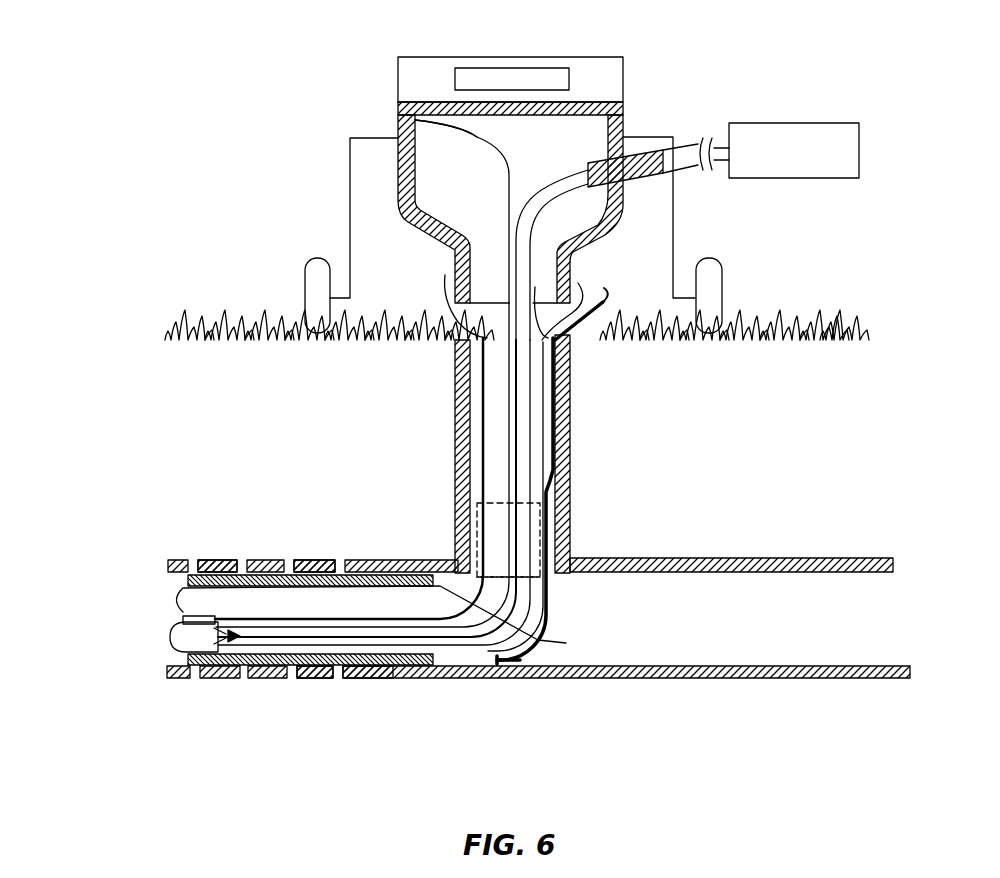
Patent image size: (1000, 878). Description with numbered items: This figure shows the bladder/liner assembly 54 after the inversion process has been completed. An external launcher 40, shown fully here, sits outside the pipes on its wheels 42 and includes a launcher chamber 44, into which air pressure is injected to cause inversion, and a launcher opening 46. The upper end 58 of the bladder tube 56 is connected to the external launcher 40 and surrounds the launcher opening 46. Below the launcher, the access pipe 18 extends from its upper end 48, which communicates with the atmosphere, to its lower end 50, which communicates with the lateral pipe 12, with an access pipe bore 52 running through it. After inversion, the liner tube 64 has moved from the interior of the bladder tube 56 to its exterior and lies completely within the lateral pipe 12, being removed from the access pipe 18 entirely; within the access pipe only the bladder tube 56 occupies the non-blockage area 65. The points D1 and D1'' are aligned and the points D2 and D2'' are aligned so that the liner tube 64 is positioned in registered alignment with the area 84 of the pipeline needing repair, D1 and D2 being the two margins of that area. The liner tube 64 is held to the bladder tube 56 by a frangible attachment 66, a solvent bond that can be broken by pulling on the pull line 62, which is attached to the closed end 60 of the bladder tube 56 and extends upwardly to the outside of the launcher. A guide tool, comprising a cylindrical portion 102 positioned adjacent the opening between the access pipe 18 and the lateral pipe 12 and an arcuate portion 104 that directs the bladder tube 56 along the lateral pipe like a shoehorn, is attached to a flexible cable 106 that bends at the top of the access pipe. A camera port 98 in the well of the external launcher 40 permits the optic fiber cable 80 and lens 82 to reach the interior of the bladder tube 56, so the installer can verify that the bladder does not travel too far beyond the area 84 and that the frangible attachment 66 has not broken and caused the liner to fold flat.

The lateral pipe 12 is at (276, 560).
The access pipe 18 is at (455, 495).
The external launcher 40 is at (380, 58).
The wheels 42 is at (723, 281).
The launcher chamber 44 is at (440, 210).
The launcher opening 46 is at (575, 357).
The upper end 48 is at (453, 345).
The lower end 50 is at (452, 557).
The access pipe bore 52 is at (555, 470).
The bladder/liner assembly 54 is at (105, 572).
The bladder tube 56 is at (545, 440).
The upper end 58 is at (445, 280).
The closed end 60 is at (180, 617).
The pull line 62 is at (462, 136).
The liner tube 64 is at (345, 678).
The non-blockage area 65 is at (548, 620).
The frangible attachment 66 is at (425, 678).
The optic fiber cable 80 is at (515, 490).
The lens 82 is at (210, 678).
The area needing repair 84 is at (243, 680).
The camera port 98 is at (650, 138).
The cylindrical portion 102 is at (572, 512).
The arcuate portion 104 is at (556, 585).
The flexible cable 106 is at (563, 348).
The margin D1 is at (142, 530).
The alignment point D1'' is at (152, 569).
The margin D2 is at (298, 529).
The alignment point D2'' is at (401, 625).